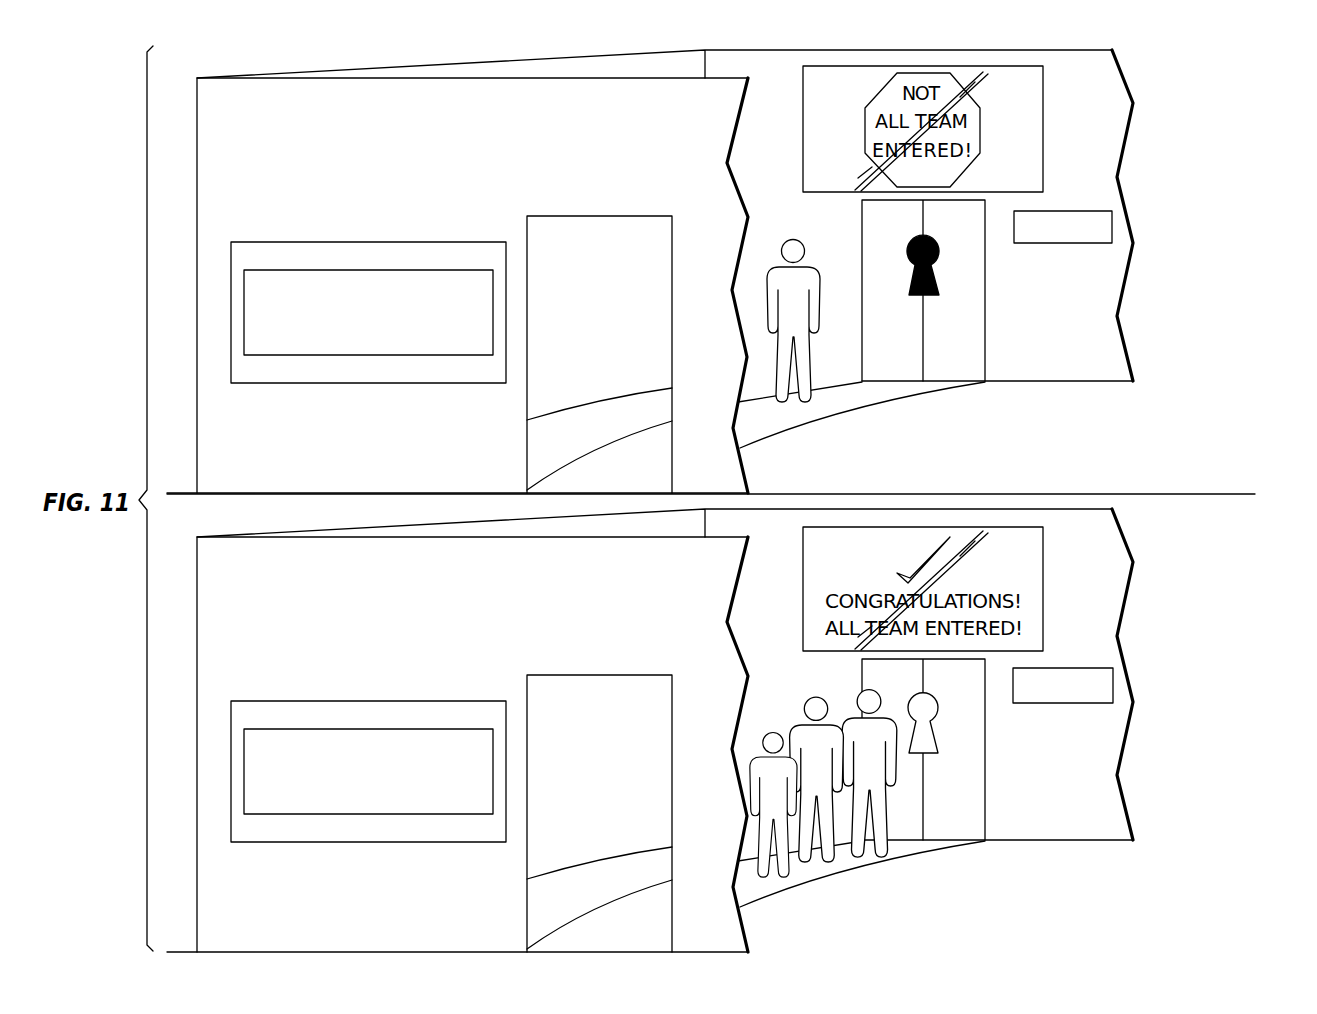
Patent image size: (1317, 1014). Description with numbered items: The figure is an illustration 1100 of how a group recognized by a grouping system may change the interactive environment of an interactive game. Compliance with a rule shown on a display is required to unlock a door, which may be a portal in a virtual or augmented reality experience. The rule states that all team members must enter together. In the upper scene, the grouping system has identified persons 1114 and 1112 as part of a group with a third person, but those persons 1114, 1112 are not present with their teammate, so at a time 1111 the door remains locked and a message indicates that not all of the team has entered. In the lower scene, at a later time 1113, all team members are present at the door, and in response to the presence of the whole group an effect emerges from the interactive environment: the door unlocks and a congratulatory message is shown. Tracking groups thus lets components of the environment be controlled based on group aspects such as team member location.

The illustration 1100 is at (1210, 69).
The time 1111 is at (1063, 244).
The person 1112 is at (833, 807).
The time 1113 is at (1063, 703).
The person 1114 is at (788, 828).